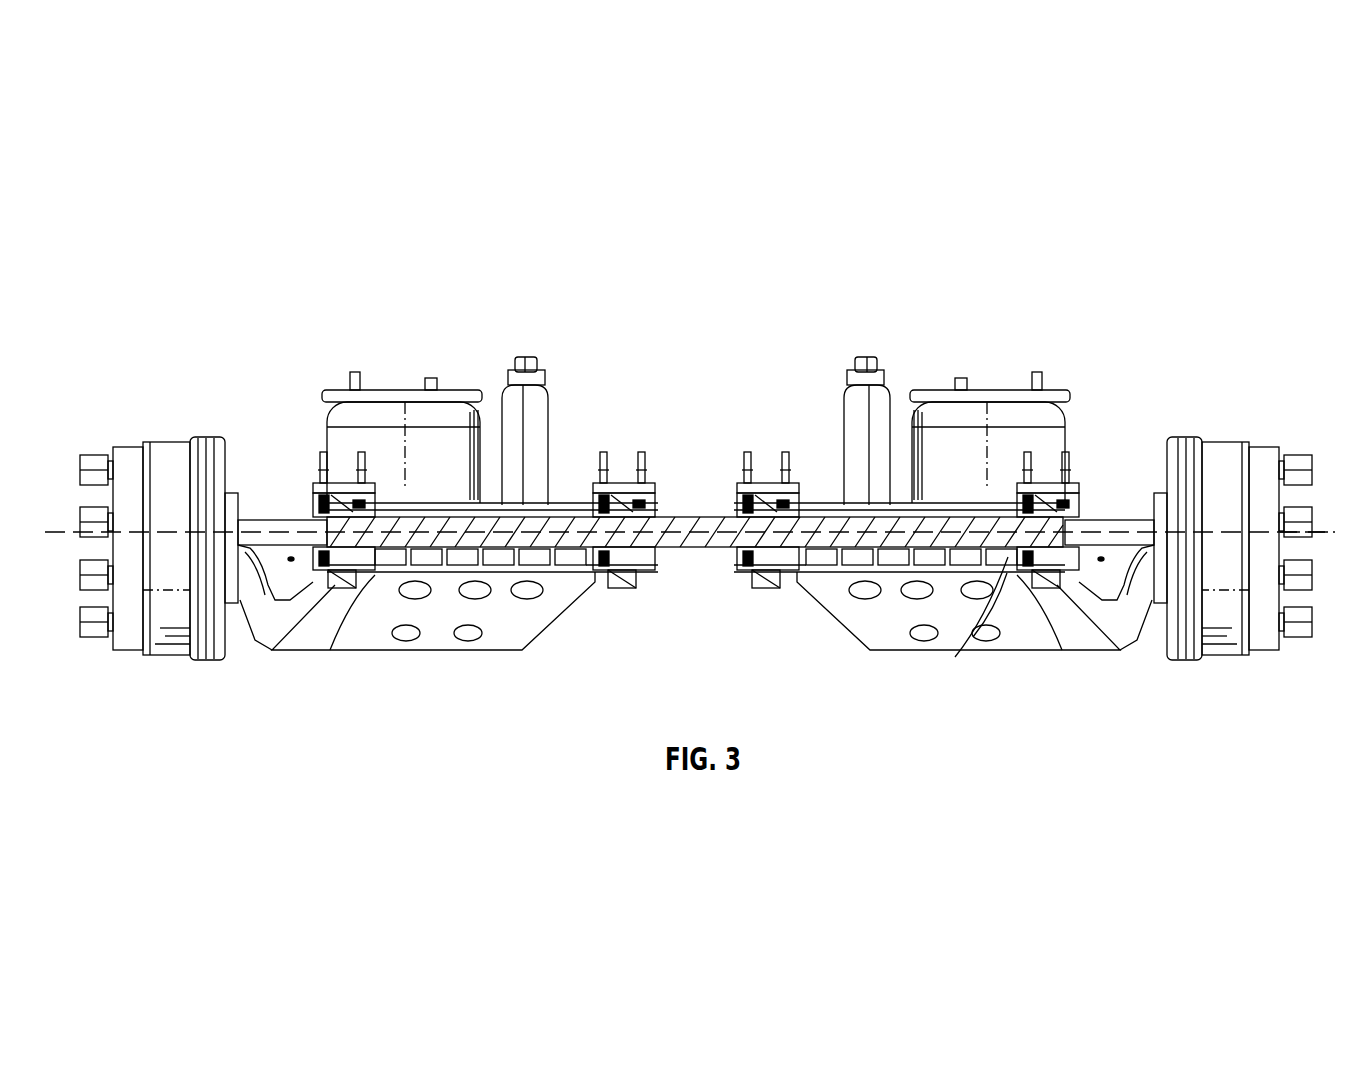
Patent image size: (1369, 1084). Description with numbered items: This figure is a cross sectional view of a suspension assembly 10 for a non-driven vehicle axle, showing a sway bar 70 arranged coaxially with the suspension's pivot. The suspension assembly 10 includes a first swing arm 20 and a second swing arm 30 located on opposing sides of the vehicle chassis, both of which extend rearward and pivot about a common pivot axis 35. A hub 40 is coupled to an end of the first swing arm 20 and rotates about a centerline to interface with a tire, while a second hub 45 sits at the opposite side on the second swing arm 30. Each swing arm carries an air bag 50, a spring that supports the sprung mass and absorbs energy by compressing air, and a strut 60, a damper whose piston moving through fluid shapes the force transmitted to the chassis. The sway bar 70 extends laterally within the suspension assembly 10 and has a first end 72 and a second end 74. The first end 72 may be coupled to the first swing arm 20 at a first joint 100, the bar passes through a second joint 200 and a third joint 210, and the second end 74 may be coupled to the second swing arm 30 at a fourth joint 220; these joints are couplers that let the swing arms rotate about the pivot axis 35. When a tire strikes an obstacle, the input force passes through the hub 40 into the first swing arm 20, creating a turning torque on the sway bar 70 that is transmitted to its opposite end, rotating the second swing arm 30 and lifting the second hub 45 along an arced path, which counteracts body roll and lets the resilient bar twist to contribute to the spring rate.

The suspension assembly 10 is at (135, 262).
The first swing arm 20 is at (888, 650).
The second swing arm 30 is at (498, 650).
The pivot axis 35 is at (1320, 530).
The hub 40 is at (1222, 452).
The second hub 45 is at (175, 452).
The air bag 50 is at (365, 410).
The strut 60 is at (523, 360).
The sway bar 70 is at (693, 548).
The first end 72 is at (1100, 605).
The second end 74 is at (330, 572).
The first joint 100 is at (1005, 578).
The second joint 200 is at (772, 600).
The third joint 210 is at (620, 600).
The fourth joint 220 is at (345, 560).